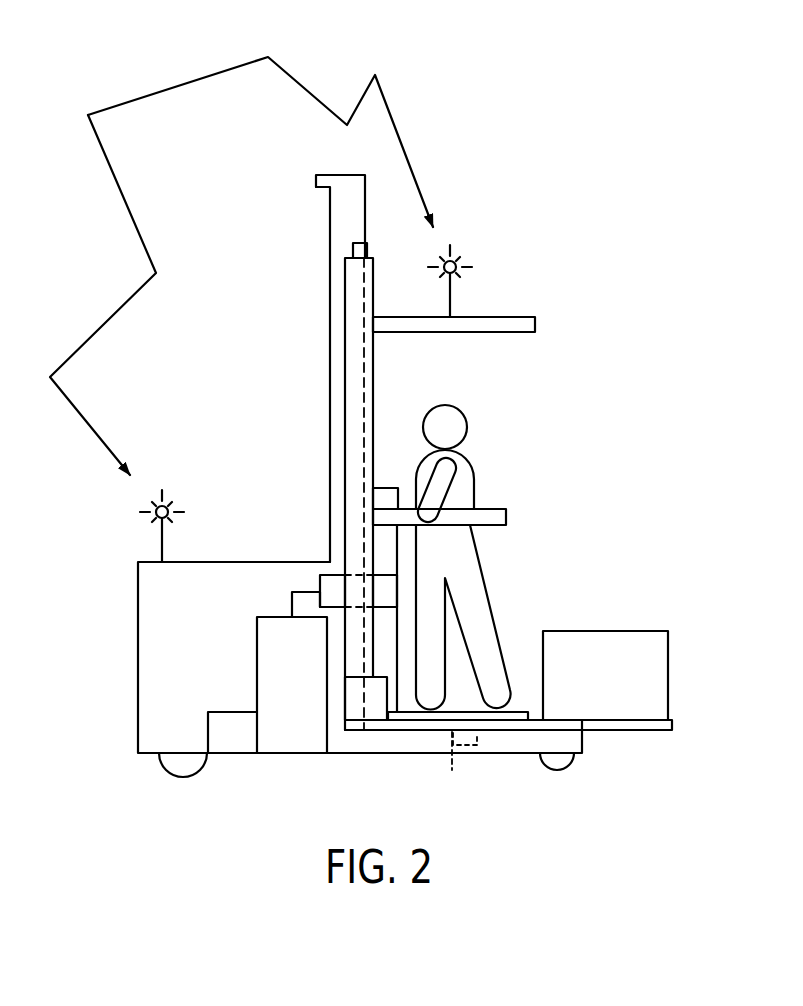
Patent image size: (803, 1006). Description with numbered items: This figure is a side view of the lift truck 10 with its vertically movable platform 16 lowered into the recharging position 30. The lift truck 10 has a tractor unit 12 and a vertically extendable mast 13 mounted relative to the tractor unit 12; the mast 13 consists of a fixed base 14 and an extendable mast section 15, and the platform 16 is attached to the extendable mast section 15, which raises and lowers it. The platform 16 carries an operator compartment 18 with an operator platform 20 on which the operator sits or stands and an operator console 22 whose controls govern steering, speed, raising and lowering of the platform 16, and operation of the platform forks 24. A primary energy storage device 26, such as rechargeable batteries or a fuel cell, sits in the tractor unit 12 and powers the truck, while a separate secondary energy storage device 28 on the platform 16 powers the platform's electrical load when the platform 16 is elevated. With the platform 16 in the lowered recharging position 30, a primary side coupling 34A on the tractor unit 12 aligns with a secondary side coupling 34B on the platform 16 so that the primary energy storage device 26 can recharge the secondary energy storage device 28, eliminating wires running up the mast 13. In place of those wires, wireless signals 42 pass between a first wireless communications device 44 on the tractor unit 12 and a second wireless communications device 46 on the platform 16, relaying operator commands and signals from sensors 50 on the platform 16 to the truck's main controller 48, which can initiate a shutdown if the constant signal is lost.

The lift truck 10 is at (609, 247).
The tractor unit 12 is at (138, 660).
The vertically extendable mast 13 is at (293, 497).
The fixed base 14 is at (330, 236).
The extendable mast section 15 is at (346, 397).
The vertically movable platform 16 is at (374, 377).
The operator compartment 18 is at (575, 446).
The operator platform 20 is at (514, 712).
The operator console 22 is at (387, 488).
The platform forks 24 is at (672, 730).
The primary energy storage device 26 is at (266, 641).
The secondary energy storage device 28 is at (353, 698).
The lowered recharging position 30 is at (629, 547).
The primary side coupling 34A is at (325, 585).
The secondary side coupling 34B is at (383, 585).
The wireless signals 42 is at (305, 87).
The first wireless communications device 44 is at (162, 538).
The second wireless communications device 46 is at (452, 294).
The main controller 48 is at (235, 712).
The sensors 50 is at (368, 251).